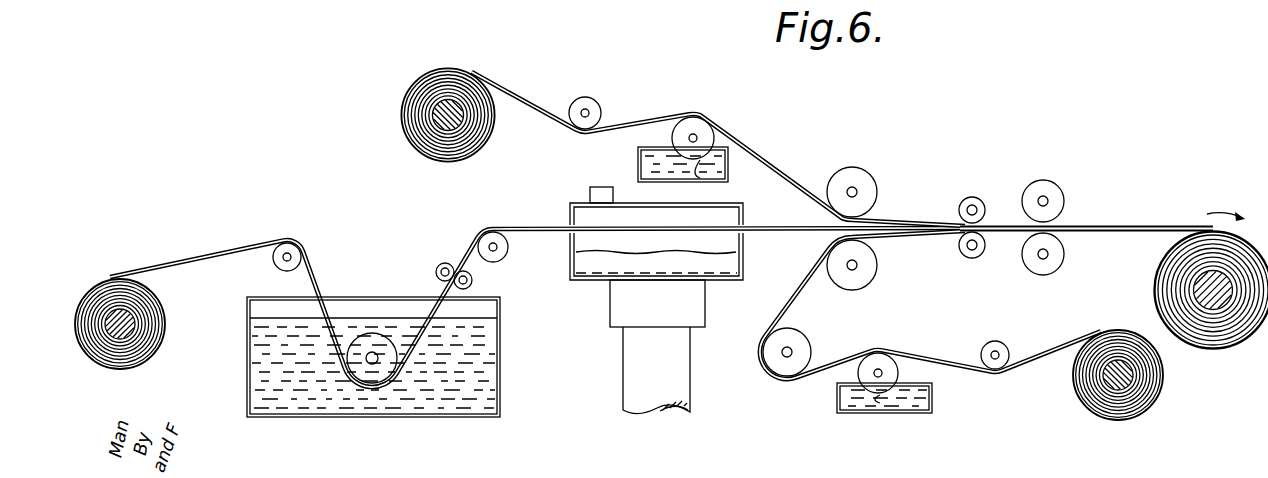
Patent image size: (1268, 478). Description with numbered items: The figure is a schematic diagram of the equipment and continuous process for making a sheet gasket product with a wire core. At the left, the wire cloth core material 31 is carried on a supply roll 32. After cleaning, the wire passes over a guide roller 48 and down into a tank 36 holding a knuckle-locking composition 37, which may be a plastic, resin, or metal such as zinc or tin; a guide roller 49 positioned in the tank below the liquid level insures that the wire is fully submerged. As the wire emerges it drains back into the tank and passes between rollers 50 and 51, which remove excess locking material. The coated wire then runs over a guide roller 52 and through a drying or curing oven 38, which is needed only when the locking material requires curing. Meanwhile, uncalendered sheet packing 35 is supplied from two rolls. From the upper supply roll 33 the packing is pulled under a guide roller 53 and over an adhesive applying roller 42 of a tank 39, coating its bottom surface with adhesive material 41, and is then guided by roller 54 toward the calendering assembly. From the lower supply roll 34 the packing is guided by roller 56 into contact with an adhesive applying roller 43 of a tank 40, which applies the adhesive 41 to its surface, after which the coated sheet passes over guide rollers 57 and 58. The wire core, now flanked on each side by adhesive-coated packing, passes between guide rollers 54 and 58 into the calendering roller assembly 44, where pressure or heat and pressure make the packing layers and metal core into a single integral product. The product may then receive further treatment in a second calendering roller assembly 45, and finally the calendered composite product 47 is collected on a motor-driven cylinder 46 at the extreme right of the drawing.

The wire cloth core material 31 is at (185, 268).
The supply roll 32 is at (148, 342).
The supply roll 33 is at (458, 78).
The supply roll 34 is at (1102, 343).
The uncalendered sheet packing 35 is at (516, 95).
The tank 36 is at (248, 392).
The knuckle-locking composition 37 is at (427, 392).
The drying or curing oven 38 is at (572, 274).
The tank 39 is at (638, 158).
The tank 40 is at (835, 400).
The adhesive material 41 is at (712, 160).
The adhesive applying roller 42 is at (700, 135).
The adhesive applying roller 43 is at (891, 370).
The calendering roller assembly 44 is at (974, 199).
The calendering roller assembly 45 is at (1052, 178).
The motor-driven cylinder 46 is at (1215, 328).
The calendered composite product 47 is at (1118, 222).
The guide roller 48 is at (300, 250).
The guide roller 49 is at (365, 343).
The roller 50 is at (443, 263).
The roller 51 is at (474, 283).
The guide roller 52 is at (495, 237).
The guide roller 53 is at (600, 106).
The guide roller 54 is at (856, 178).
The guide roller 56 is at (998, 341).
The guide roller 57 is at (802, 345).
The guide roller 58 is at (866, 274).